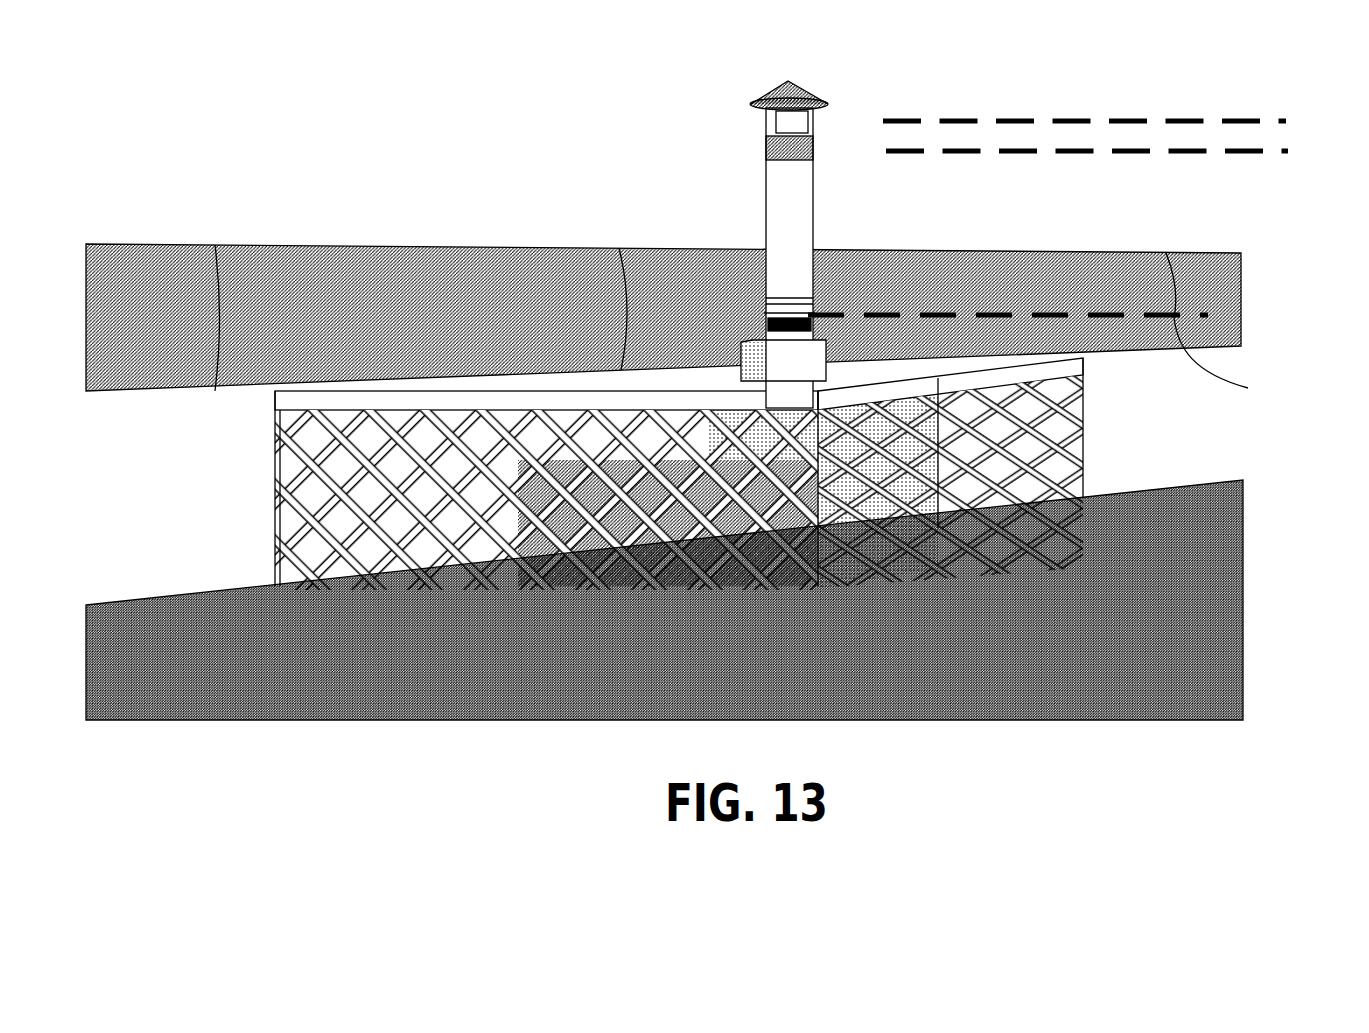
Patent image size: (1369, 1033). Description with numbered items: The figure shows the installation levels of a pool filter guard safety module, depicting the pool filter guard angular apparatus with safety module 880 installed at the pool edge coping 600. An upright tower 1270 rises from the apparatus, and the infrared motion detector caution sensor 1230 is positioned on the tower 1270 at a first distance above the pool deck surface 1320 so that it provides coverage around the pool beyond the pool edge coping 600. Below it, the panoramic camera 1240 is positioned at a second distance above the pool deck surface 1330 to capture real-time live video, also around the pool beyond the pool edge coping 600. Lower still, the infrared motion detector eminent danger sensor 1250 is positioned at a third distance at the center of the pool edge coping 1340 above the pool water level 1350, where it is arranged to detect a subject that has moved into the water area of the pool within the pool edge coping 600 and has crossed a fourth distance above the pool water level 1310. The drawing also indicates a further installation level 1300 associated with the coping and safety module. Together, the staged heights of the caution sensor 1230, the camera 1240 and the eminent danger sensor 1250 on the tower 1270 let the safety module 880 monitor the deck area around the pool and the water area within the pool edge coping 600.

The pool edge coping 600 is at (237, 247).
The pool filter guard angular apparatus with safety module 880 is at (677, 87).
The infrared motion detector caution sensor 1230 is at (797, 112).
The panoramic camera 1240 is at (798, 140).
The infrared motion detector eminent danger sensor 1250 is at (762, 317).
The tower 1270 is at (768, 202).
The conduit section 1300 is at (1200, 245).
The fourth distance above the pool water level 1310 is at (1242, 359).
The first distance above the pool deck surface 1320 is at (1063, 113).
The second distance above the pool deck surface 1330 is at (1063, 143).
The third distance at the center of the pool edge coping 1340 is at (1003, 307).
The pool water level 1350 is at (1180, 470).